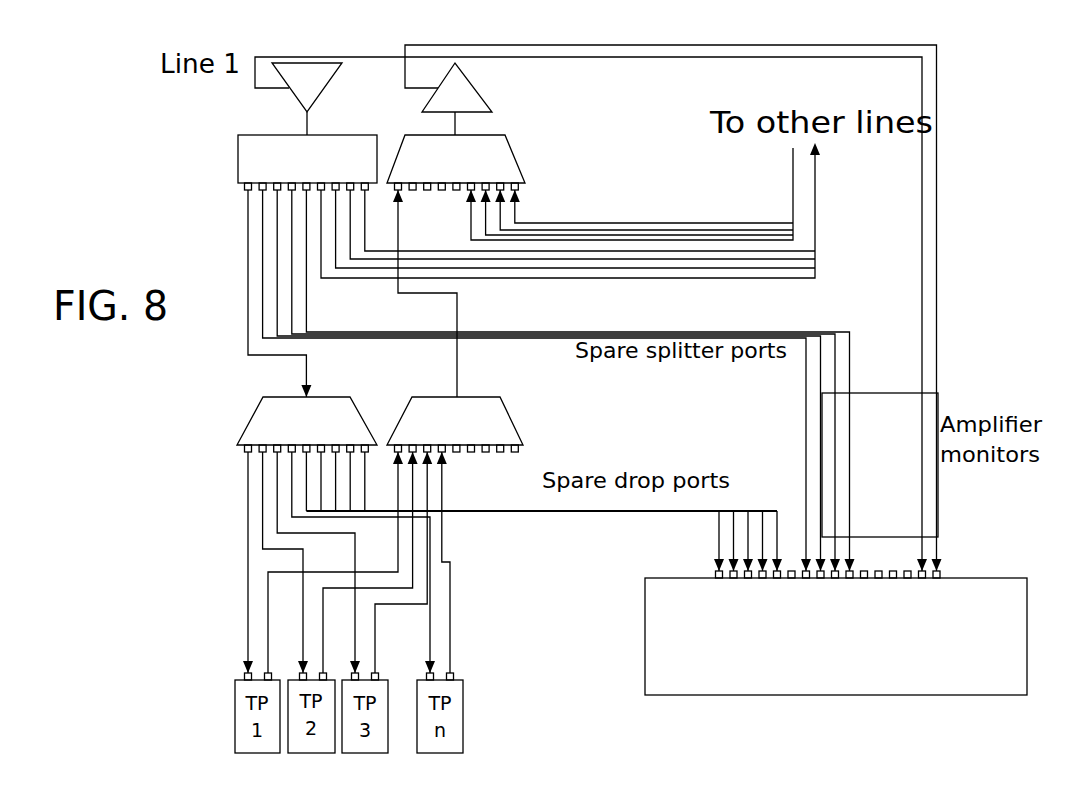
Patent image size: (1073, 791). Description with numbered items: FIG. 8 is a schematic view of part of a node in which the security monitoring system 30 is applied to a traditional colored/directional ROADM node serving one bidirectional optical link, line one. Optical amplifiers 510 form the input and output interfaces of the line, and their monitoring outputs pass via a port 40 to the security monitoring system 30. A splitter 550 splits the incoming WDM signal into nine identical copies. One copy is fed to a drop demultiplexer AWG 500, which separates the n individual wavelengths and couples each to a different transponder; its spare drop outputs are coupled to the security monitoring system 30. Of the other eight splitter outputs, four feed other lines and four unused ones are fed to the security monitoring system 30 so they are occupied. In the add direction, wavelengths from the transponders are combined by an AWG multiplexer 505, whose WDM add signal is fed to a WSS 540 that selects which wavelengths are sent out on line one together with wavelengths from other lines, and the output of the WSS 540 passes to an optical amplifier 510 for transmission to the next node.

The optical amplifier 510 is at (399, 99).
The splitter 550 is at (277, 162).
The WSS 540 is at (480, 162).
The AWG multiplexer 505 is at (475, 424).
The drop demultiplexer AWG 500 is at (219, 327).
The port 40 is at (880, 465).
The security monitoring system 30 is at (836, 633).